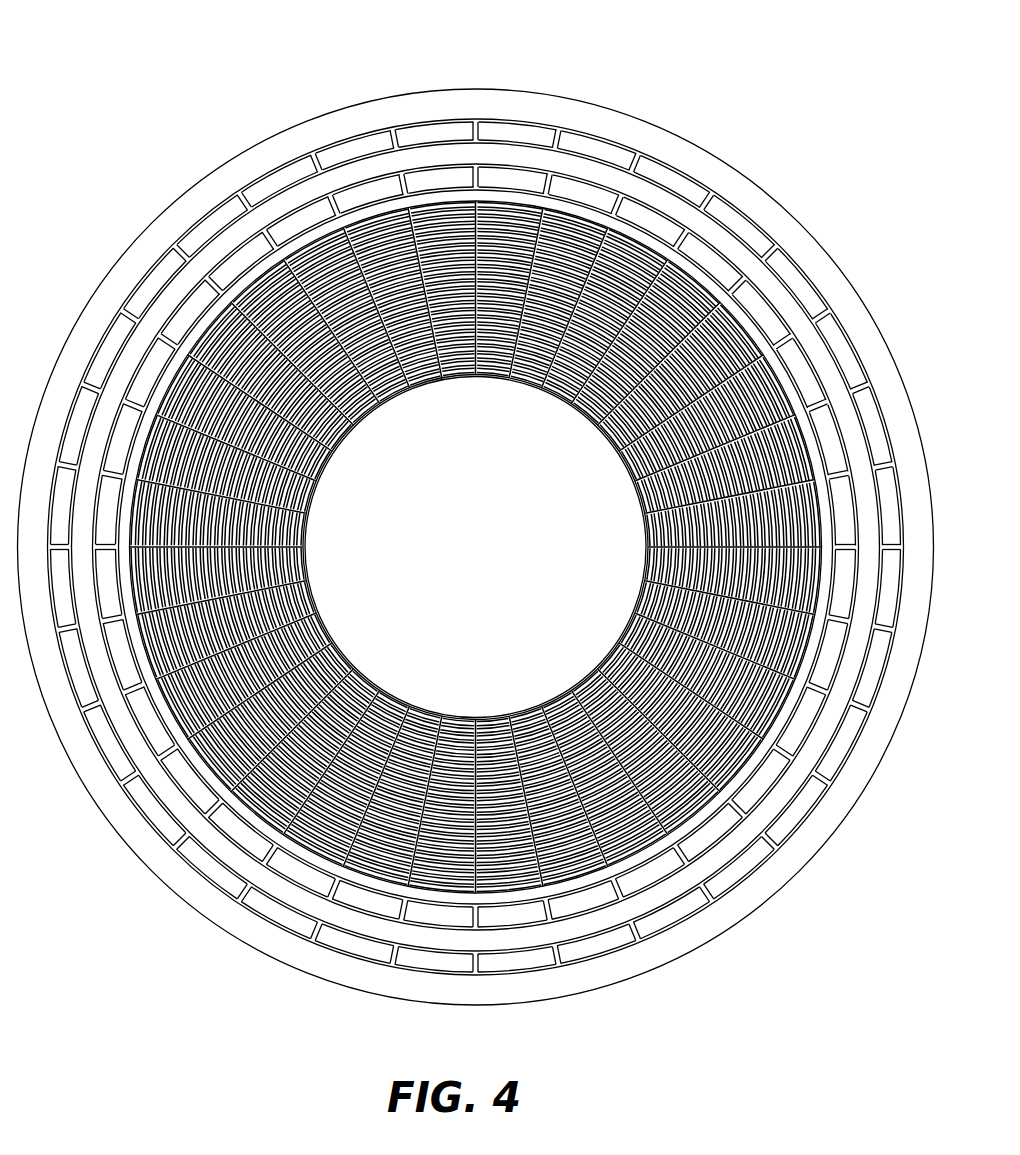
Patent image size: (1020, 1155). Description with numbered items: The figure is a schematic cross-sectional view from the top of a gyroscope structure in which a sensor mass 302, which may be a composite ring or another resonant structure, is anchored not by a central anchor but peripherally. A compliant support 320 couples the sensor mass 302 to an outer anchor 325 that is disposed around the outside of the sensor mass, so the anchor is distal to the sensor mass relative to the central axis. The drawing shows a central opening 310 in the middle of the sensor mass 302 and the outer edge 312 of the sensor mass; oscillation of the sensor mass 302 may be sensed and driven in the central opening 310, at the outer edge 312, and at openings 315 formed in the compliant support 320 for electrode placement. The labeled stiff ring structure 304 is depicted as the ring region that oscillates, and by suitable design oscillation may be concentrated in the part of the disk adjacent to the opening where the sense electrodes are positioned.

The outer anchor 325 is at (320, 136).
The compliant support 320 is at (591, 157).
The outer edge 312 is at (635, 238).
The openings 315 is at (385, 438).
The stiff ring structure 304 is at (655, 337).
The sensor mass 302 is at (318, 633).
The central opening 310 is at (473, 551).